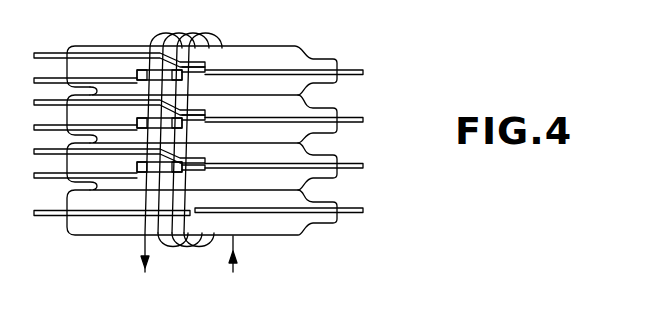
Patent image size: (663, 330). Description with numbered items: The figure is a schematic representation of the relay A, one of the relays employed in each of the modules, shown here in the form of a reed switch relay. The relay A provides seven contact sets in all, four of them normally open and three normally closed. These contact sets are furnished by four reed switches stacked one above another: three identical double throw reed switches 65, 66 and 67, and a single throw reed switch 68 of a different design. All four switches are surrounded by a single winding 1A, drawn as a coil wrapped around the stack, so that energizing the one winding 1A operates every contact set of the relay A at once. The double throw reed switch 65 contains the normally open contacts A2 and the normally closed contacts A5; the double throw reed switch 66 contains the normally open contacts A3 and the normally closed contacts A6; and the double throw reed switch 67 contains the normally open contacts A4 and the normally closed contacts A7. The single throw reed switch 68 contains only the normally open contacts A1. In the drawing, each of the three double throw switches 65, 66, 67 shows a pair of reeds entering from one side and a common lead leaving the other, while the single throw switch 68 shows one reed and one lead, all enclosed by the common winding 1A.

The relay A is at (243, 37).
The winding 1A is at (173, 33).
The normally open contacts A1 is at (207, 213).
The normally open contacts A2 is at (203, 65).
The normally open contacts A3 is at (212, 111).
The normally open contacts A4 is at (208, 160).
The normally closed contacts A5 is at (208, 74).
The normally closed contacts A6 is at (206, 122).
The normally closed contacts A7 is at (206, 169).
The double throw reed switch 65 is at (333, 58).
The double throw reed switch 66 is at (338, 108).
The double throw reed switch 67 is at (335, 155).
The single throw reed switch 68 is at (338, 202).